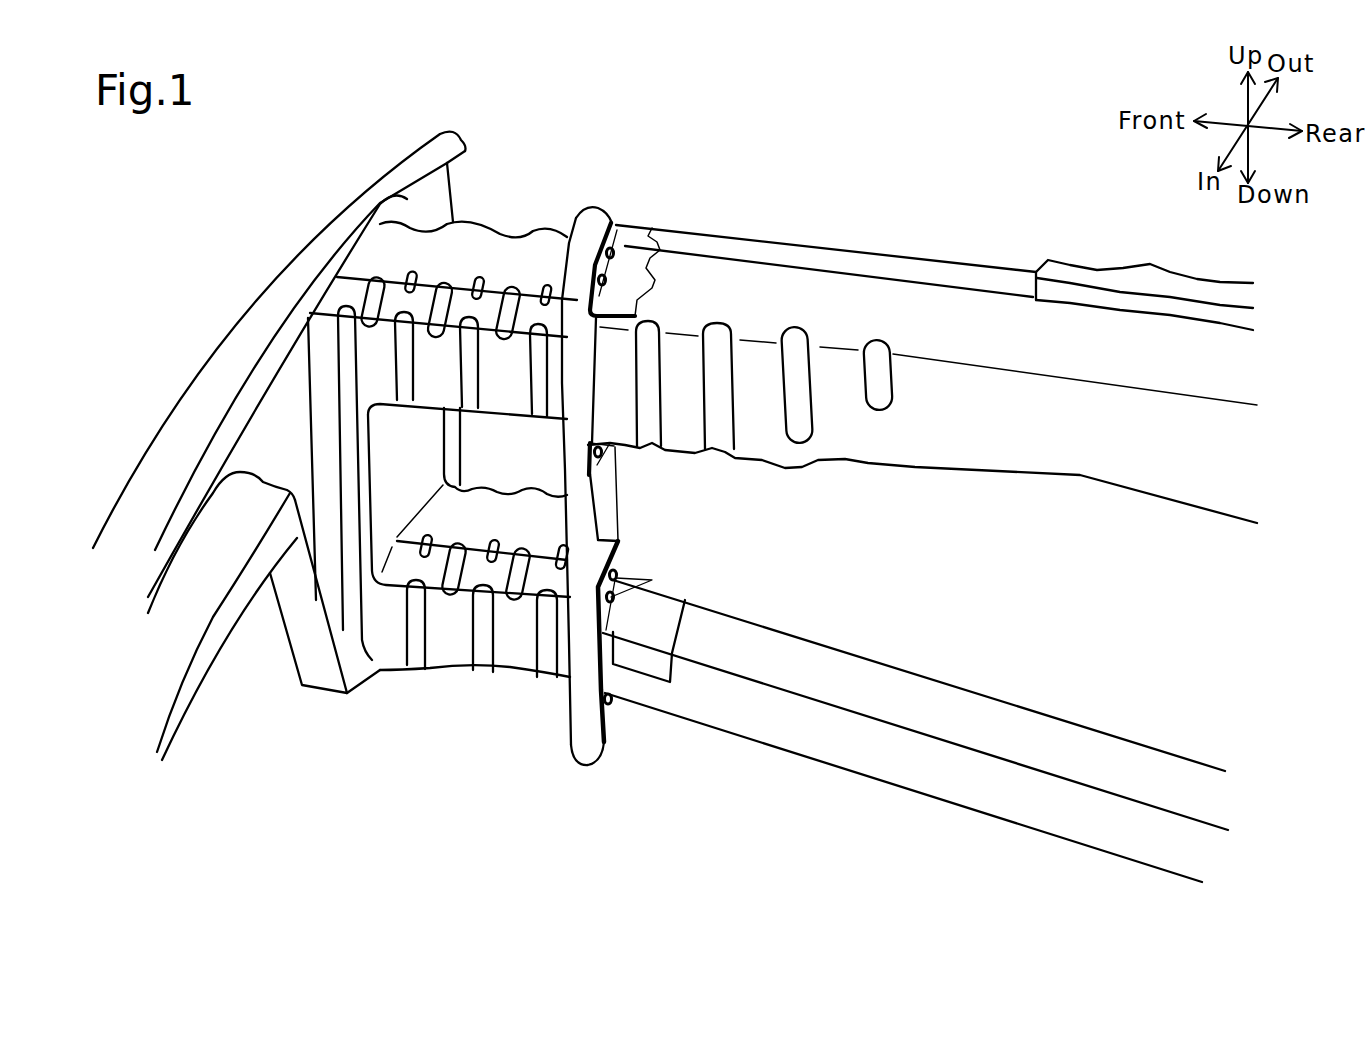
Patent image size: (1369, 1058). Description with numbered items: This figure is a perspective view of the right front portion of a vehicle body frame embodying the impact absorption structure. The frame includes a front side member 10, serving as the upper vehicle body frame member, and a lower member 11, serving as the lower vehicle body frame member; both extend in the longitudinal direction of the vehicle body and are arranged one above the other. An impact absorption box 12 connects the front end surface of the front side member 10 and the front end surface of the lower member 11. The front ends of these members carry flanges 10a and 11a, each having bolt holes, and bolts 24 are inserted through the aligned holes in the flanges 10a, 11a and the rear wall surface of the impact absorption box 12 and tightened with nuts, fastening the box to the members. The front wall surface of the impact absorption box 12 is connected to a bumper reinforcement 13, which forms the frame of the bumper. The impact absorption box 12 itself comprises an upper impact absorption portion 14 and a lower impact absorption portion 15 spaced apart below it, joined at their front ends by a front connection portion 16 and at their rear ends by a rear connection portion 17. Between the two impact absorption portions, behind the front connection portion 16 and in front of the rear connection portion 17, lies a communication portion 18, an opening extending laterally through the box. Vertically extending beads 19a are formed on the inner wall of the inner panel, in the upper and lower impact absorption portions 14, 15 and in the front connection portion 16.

The front side member 10 is at (922, 370).
The flange 10a is at (636, 351).
The lower member 11 is at (915, 731).
The flange 11a is at (648, 612).
The impact absorption box 12 is at (506, 164).
The bumper reinforcement 13 is at (269, 446).
The upper impact absorption portion 14 is at (443, 262).
The lower impact absorption portion 15 is at (475, 631).
The front connection portion 16 is at (400, 483).
The rear connection portion 17 is at (482, 484).
The communication portion 18 is at (518, 531).
The bead 19a is at (457, 658).
The bolt 24 is at (645, 496).